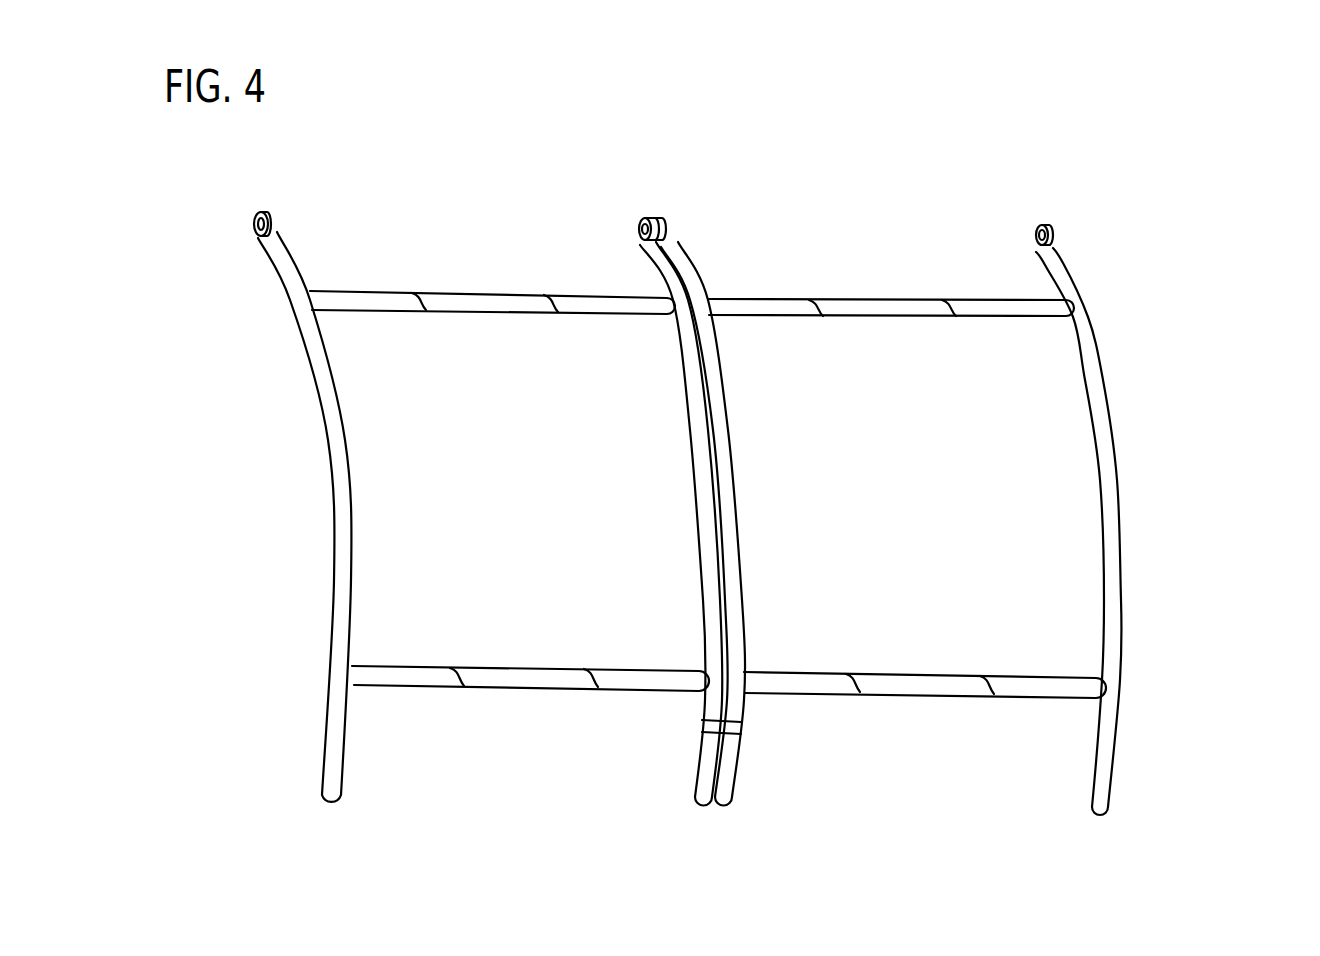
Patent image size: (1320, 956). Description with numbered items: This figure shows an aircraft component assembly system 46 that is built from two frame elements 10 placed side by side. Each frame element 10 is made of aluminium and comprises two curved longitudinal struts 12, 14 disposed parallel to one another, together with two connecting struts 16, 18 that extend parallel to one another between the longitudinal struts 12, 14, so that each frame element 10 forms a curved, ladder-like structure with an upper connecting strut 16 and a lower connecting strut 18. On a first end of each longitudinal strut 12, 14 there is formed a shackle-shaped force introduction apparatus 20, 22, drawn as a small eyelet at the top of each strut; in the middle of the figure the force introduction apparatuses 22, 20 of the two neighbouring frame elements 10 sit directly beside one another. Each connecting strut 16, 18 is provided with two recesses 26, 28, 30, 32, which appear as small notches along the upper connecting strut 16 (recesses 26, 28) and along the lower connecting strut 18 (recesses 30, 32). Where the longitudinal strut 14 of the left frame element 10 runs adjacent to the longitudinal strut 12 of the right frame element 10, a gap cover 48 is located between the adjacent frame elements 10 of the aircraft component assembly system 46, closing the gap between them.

The frame element 10 is at (244, 282).
The longitudinal strut 12 is at (280, 237).
The longitudinal strut 14 is at (641, 245).
The connecting strut 16 is at (486, 297).
The connecting strut 18 is at (517, 692).
The force introduction apparatus 20 is at (263, 212).
The force introduction apparatus 22 is at (645, 218).
The recess 26 is at (420, 297).
The recess 28 is at (550, 298).
The recess 30 is at (459, 672).
The recess 32 is at (593, 673).
The aircraft component assembly system 46 is at (1185, 430).
The gap cover 48 is at (714, 432).